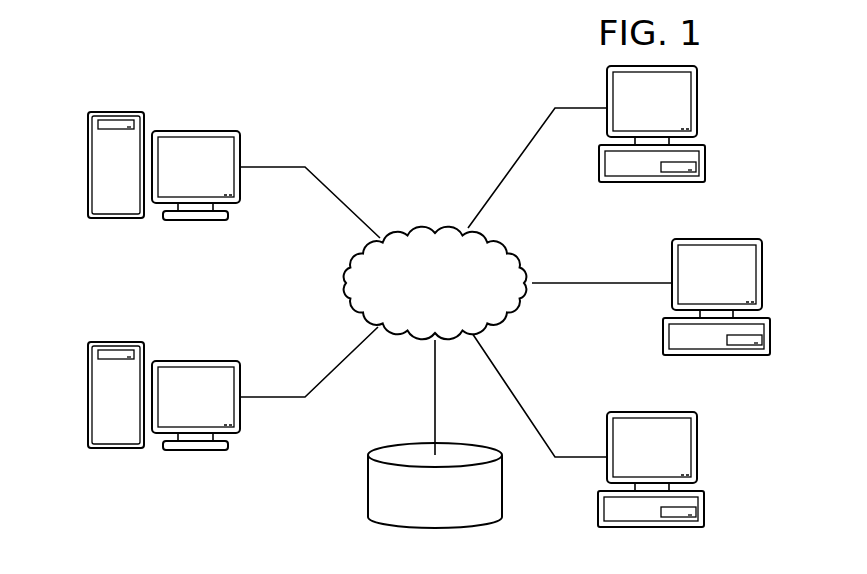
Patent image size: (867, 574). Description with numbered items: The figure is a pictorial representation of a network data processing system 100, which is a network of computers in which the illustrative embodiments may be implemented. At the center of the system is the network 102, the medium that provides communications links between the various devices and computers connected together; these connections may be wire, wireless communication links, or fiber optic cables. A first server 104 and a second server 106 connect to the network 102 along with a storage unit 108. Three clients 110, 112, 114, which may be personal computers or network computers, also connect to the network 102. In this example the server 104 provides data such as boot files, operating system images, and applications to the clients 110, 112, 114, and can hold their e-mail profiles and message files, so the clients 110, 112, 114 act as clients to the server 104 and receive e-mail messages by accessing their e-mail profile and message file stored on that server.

The network data processing system 100 is at (309, 76).
The network 102 is at (430, 223).
The server 104 is at (88, 165).
The server 106 is at (88, 395).
The storage unit 108 is at (368, 488).
The client 110 is at (705, 163).
The client 112 is at (770, 337).
The client 114 is at (704, 515).